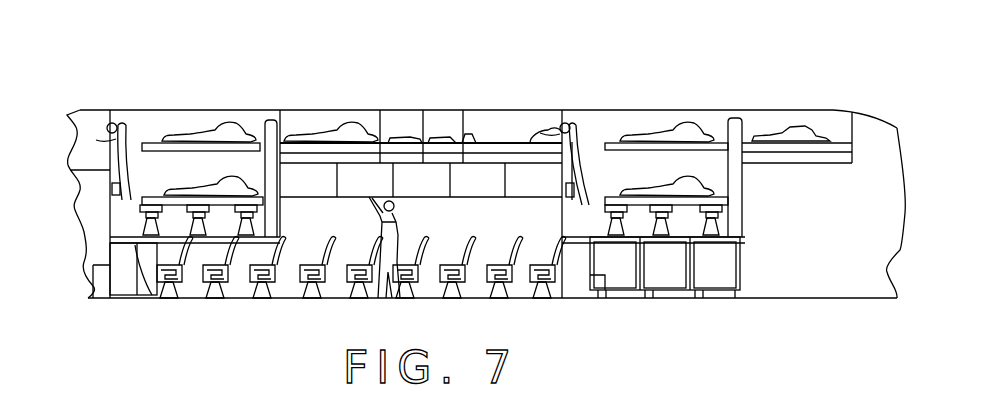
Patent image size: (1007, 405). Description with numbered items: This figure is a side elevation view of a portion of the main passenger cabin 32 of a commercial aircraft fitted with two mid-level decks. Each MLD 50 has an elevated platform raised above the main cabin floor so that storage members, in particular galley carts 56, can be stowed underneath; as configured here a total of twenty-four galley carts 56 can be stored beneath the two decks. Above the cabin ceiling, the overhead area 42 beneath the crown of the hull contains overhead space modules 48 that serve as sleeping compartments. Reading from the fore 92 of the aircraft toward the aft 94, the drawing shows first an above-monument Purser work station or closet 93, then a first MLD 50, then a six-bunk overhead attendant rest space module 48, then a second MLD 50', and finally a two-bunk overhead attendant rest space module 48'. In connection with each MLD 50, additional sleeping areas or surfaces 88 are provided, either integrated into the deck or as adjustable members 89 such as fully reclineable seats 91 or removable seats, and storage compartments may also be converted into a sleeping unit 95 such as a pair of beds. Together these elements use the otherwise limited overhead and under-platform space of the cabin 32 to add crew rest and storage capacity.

The main passenger cabin 32 is at (499, 225).
The overhead area 42 is at (517, 126).
The overhead space module 48 is at (421, 117).
The overhead space module 48' is at (811, 94).
The MLD 50 is at (222, 149).
The second MLD 50' is at (685, 132).
The galley cart 56 is at (140, 283).
The additional sleeping area or surface 88 is at (148, 186).
The adjustable member 89 is at (713, 220).
The fully reclineable seat 91 is at (667, 233).
The fore 92 is at (60, 165).
The Purser work station or closet 93 is at (80, 122).
The aft 94 is at (873, 144).
The sleeping unit 95 is at (608, 143).